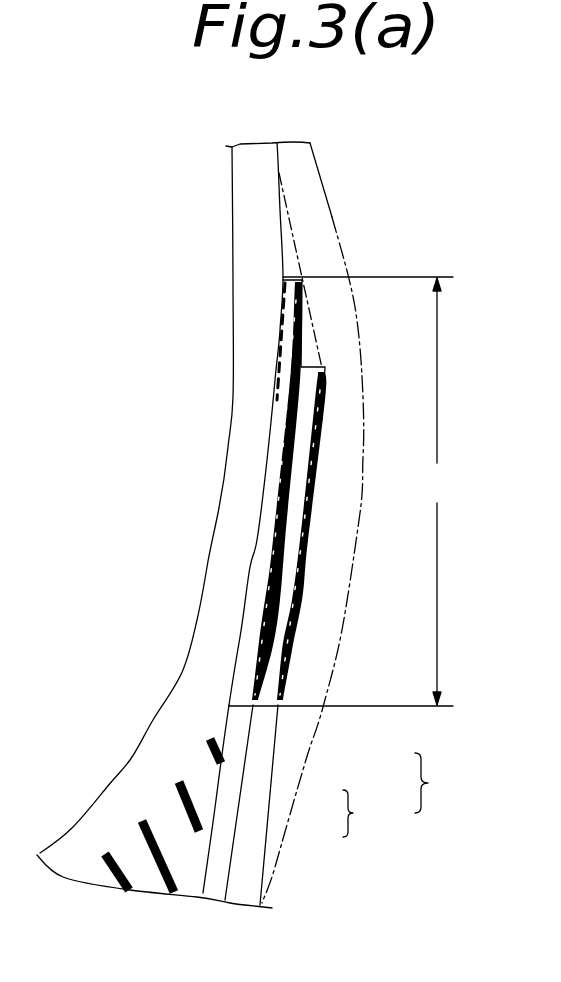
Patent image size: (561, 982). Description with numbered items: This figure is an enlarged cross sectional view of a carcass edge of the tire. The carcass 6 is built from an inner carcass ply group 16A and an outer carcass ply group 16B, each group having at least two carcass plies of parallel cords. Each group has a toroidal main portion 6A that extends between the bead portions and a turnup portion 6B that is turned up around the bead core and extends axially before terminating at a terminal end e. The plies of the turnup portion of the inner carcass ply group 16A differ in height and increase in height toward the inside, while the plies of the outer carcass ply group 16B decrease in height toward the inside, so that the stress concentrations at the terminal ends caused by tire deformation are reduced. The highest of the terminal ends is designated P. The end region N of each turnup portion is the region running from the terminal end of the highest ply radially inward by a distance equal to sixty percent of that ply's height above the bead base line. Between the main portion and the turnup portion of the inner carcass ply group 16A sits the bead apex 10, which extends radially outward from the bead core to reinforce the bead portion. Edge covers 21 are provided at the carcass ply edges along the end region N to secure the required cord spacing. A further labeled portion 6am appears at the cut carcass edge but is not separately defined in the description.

The carcass 6 is at (430, 783).
The toroidal main portion 6A is at (190, 719).
The turnup portion 6B is at (234, 818).
The tube wall armor 6am is at (198, 862).
The inner carcass ply group 16A is at (375, 813).
The outer carcass ply group 16B is at (297, 770).
The edge cover 21 is at (273, 584).
The bead apex 10 is at (166, 829).
The highest terminal end P is at (285, 277).
The terminal end e is at (301, 275).
The end region N is at (341, 491).